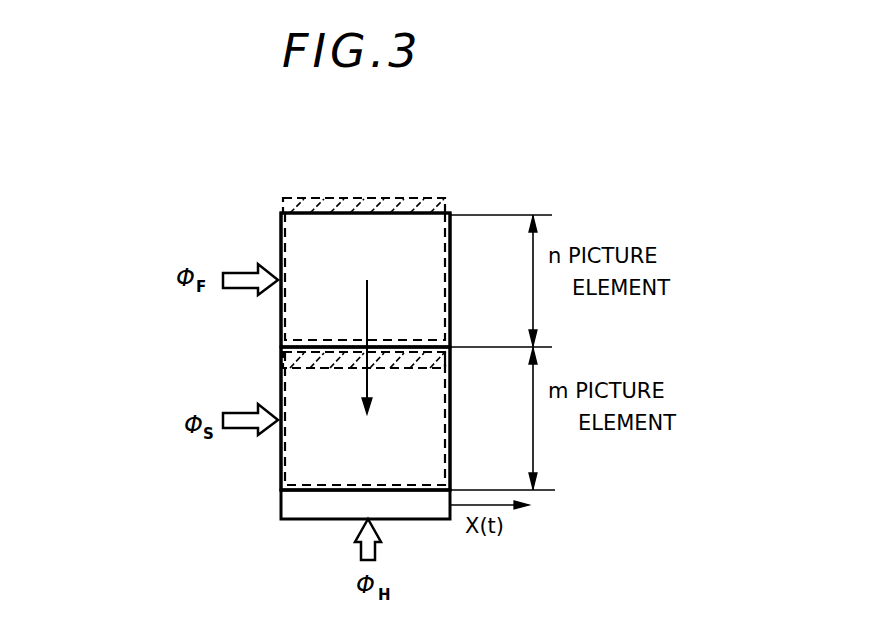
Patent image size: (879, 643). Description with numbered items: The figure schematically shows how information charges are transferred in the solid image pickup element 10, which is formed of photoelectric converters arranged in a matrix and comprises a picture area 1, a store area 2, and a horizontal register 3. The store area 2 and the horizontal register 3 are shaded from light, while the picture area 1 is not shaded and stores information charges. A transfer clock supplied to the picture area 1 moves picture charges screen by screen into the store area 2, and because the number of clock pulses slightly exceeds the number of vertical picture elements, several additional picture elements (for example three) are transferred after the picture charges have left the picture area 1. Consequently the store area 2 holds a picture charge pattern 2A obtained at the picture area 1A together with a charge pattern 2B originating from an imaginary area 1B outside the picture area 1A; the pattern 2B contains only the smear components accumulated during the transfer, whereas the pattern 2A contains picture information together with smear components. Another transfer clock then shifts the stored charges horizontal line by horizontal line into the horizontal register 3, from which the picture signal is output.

The solid-state image sensor 10 is at (240, 352).
The image pickup section 1 is at (281, 237).
The photosensitive region of image pickup section 1A is at (291, 315).
The transfer gate region of image pickup section 1B is at (290, 204).
The storage section 2 is at (281, 463).
The storage region of storage section 2A is at (284, 488).
The transfer gate region of storage section 2B is at (281, 362).
The horizontal transfer register 3 is at (311, 520).